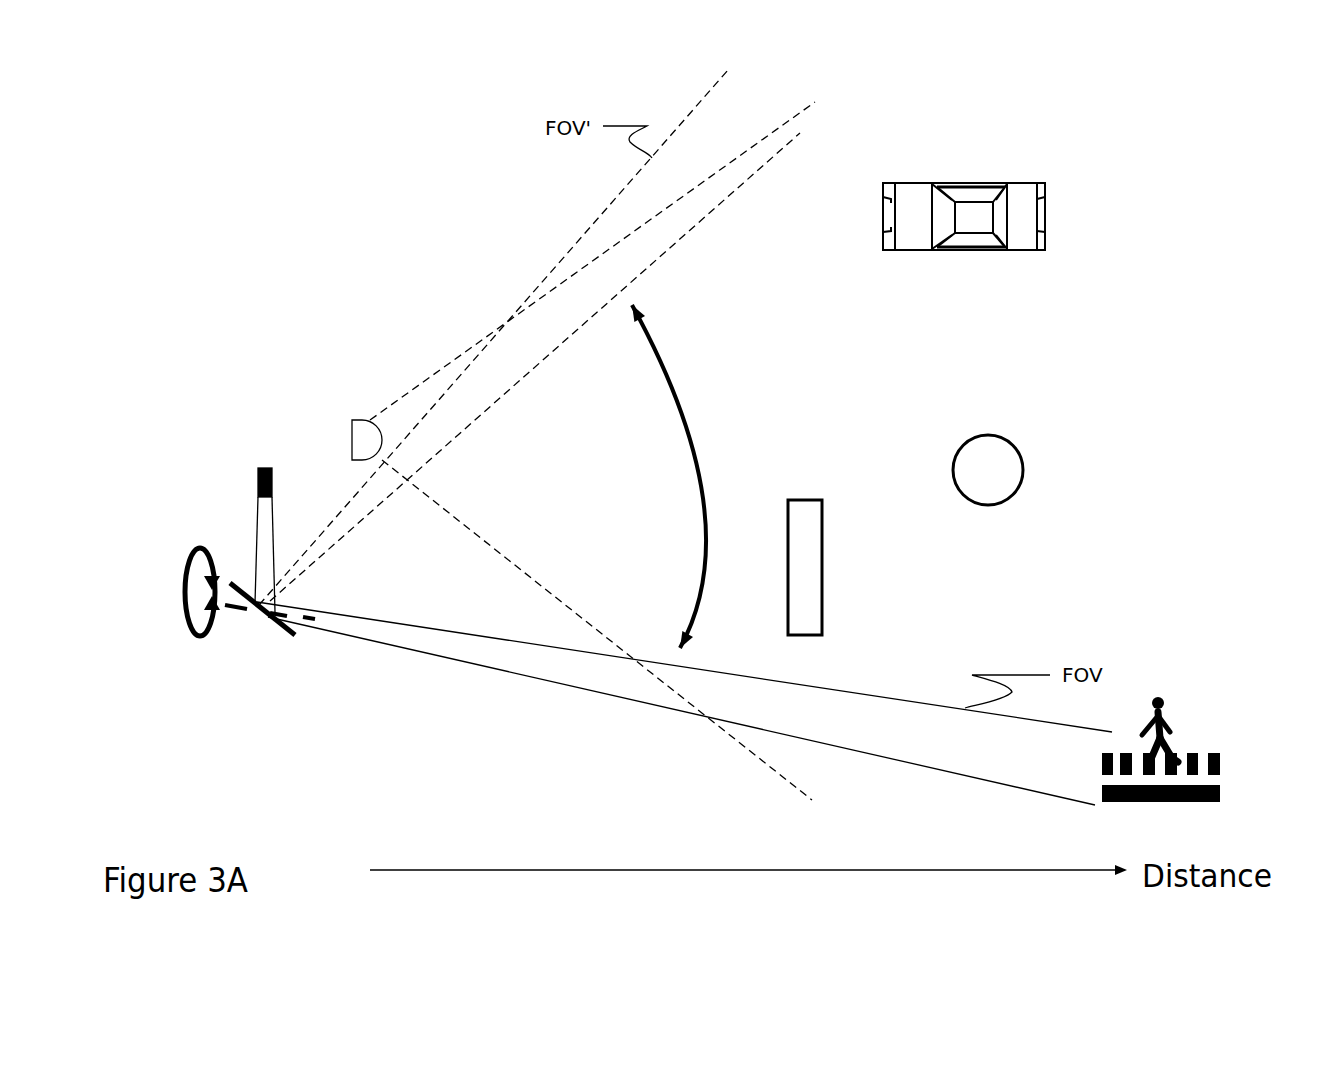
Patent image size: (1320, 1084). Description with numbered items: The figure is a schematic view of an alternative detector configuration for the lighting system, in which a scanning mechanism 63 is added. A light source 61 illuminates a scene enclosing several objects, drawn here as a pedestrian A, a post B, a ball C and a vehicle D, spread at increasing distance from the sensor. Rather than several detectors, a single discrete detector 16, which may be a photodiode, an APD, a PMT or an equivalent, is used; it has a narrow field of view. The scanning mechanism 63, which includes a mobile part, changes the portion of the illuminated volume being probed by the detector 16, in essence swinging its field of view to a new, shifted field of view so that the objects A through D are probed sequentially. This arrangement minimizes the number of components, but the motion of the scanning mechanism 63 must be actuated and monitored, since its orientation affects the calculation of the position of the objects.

The detector 16 is at (259, 486).
The light source 61 is at (352, 440).
The scanning mechanism 63 is at (267, 613).
The object A is at (1178, 725).
The object B is at (822, 568).
The object C is at (1023, 472).
The object D is at (1045, 218).